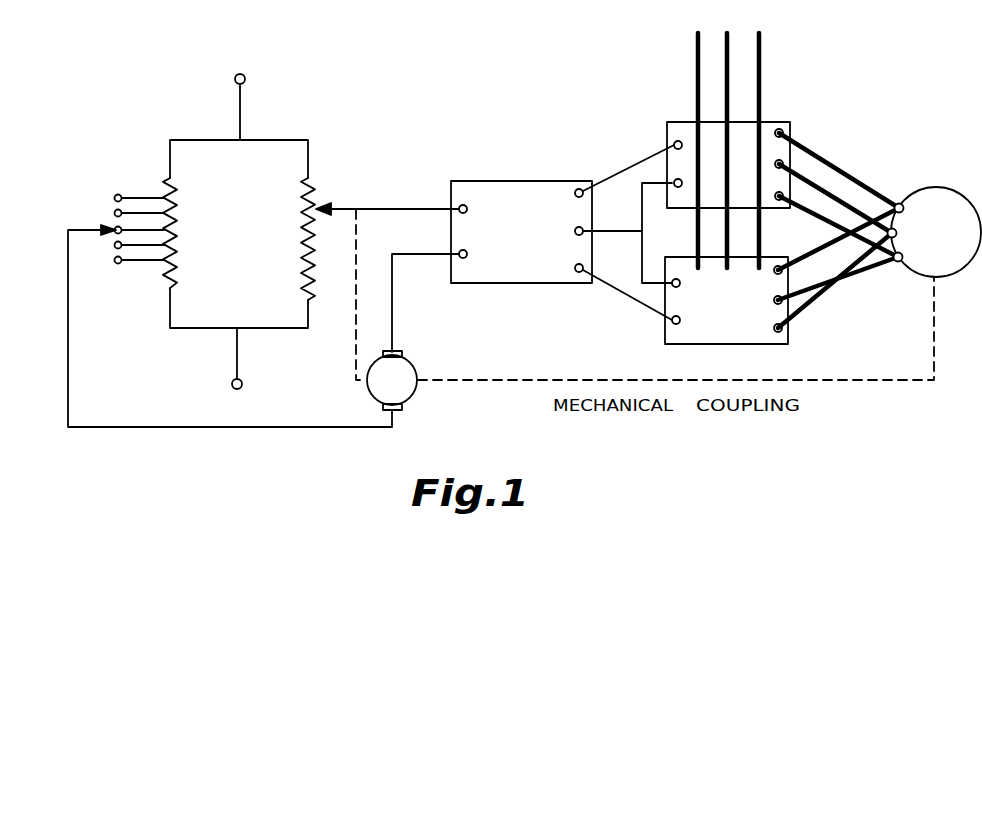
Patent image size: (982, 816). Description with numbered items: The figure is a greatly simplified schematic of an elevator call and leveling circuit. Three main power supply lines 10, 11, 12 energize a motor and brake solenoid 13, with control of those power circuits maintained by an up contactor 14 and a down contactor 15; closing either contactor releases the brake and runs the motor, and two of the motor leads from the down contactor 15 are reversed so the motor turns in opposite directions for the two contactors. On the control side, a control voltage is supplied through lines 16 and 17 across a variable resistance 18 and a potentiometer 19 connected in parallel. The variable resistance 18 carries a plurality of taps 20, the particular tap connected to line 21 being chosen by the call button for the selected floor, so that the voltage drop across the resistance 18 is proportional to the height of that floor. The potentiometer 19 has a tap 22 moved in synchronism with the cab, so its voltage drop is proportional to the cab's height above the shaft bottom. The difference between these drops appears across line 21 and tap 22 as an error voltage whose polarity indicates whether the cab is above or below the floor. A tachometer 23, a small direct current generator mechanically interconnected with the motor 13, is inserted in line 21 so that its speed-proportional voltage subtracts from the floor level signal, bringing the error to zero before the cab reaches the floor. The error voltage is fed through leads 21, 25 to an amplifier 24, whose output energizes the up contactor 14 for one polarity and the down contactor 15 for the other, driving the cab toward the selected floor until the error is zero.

The main power supply line 10 is at (696, 52).
The main power supply line 11 is at (724, 44).
The main power supply line 12 is at (762, 45).
The motor and brake solenoid 13 is at (951, 192).
The up contactor 14 is at (790, 122).
The down contactor 15 is at (788, 344).
The control voltage line 16 is at (245, 82).
The control voltage line 17 is at (238, 368).
The variable resistance 18 is at (178, 227).
The potentiometer 19 is at (302, 244).
The taps 20 is at (112, 205).
The line 21 is at (68, 347).
The tap 22 is at (322, 205).
The tachometer 23 is at (410, 362).
The amplifier 24 is at (515, 181).
The lead 25 is at (400, 207).